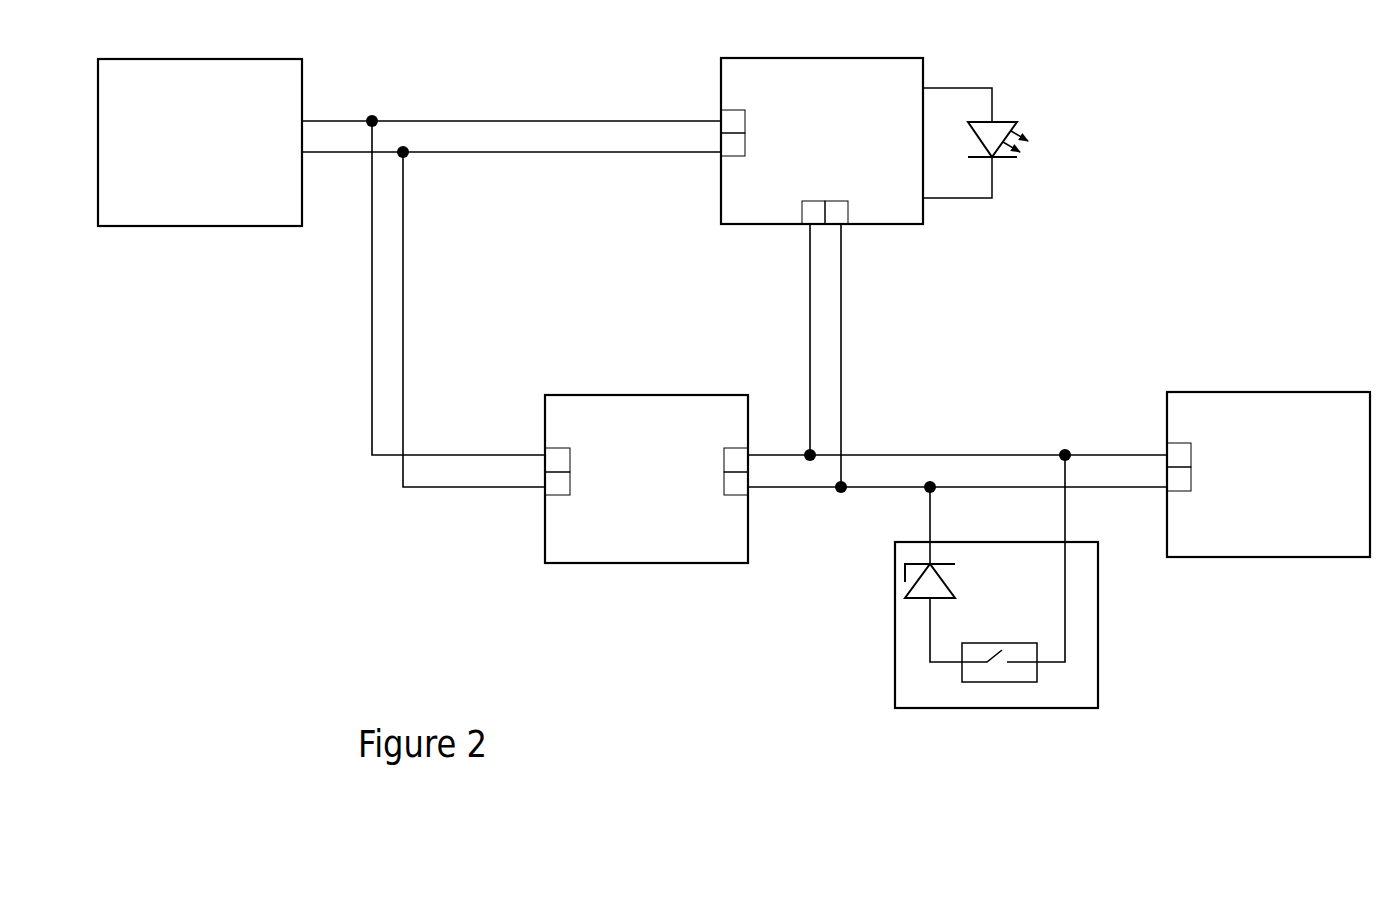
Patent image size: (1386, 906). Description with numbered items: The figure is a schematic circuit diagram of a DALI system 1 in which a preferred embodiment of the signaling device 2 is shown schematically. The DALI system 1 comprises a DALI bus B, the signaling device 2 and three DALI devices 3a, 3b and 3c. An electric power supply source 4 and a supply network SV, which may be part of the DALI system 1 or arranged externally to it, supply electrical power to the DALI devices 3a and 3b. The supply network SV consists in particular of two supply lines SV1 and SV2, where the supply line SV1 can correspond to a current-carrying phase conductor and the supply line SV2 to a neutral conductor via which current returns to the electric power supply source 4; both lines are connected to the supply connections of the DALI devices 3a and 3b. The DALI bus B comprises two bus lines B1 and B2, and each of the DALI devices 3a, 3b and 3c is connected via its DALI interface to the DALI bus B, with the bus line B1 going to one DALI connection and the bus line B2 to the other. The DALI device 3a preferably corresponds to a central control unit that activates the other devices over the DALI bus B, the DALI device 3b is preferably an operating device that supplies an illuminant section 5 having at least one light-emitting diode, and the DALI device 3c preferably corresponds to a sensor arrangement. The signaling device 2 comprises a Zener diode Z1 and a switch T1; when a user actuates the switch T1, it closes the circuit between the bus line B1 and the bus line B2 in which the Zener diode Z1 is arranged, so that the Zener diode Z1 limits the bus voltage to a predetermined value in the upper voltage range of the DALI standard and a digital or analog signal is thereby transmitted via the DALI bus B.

The DALI system 1 is at (1245, 170).
The signaling device 2 is at (1035, 578).
The DALI device 3a is at (646, 479).
The DALI device 3b is at (822, 141).
The DALI device 3c is at (1268, 474).
The electric power supply source 4 is at (200, 142).
The illuminant section 5 is at (1008, 117).
The supply network SV is at (526, 198).
The supply line SV1 is at (374, 231).
The supply line SV2 is at (405, 289).
The DALI bus B is at (962, 262).
The bus line B1 is at (812, 300).
The bus line B2 is at (844, 351).
The Zener diode Z1 is at (941, 613).
The switch T1 is at (999, 652).